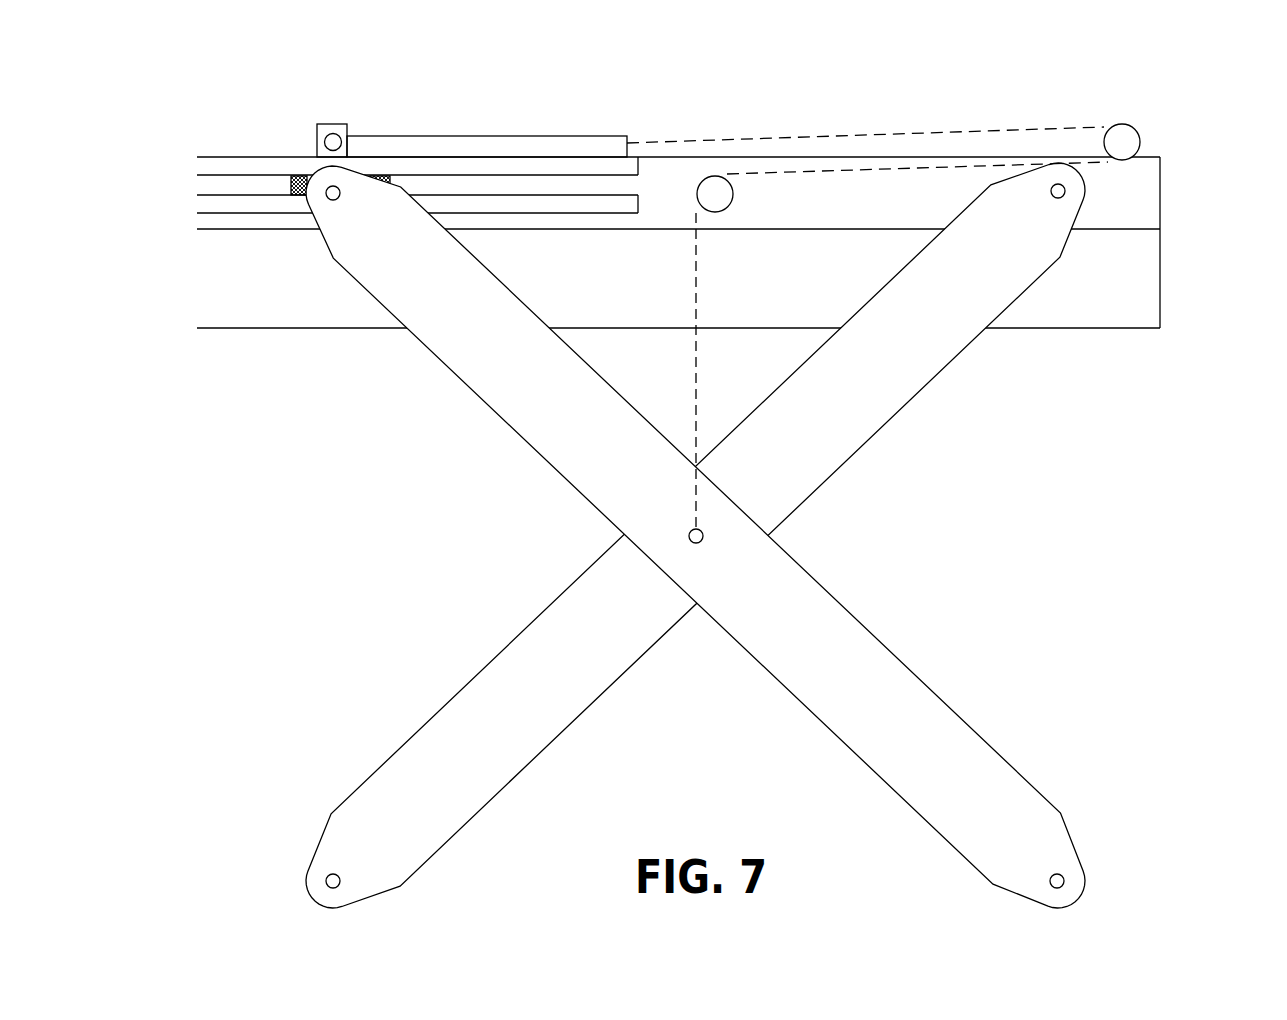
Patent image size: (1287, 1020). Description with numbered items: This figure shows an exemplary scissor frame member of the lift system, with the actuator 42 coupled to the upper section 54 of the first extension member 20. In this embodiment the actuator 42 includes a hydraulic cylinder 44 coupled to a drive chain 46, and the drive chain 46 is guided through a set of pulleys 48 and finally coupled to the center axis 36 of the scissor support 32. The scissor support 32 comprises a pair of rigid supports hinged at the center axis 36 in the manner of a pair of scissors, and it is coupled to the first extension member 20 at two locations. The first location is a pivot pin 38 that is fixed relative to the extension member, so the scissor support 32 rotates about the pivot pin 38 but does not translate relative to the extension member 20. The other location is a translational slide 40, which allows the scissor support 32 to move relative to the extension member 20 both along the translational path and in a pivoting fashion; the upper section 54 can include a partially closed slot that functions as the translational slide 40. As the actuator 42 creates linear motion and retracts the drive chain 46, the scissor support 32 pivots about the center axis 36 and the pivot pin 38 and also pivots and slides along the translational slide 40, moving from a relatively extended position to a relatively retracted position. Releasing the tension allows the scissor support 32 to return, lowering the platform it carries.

The first extension member 20 is at (743, 123).
The first scissor support 32 is at (887, 467).
The center axis 36 is at (702, 540).
The pivot pin 38 is at (1065, 192).
The translational slide 40 is at (308, 238).
The actuator 42 is at (327, 107).
The hydraulic cylinder 44 is at (530, 136).
The drive chain 46 is at (833, 127).
The pulley 48 is at (1140, 148).
The upper section 54 is at (253, 168).